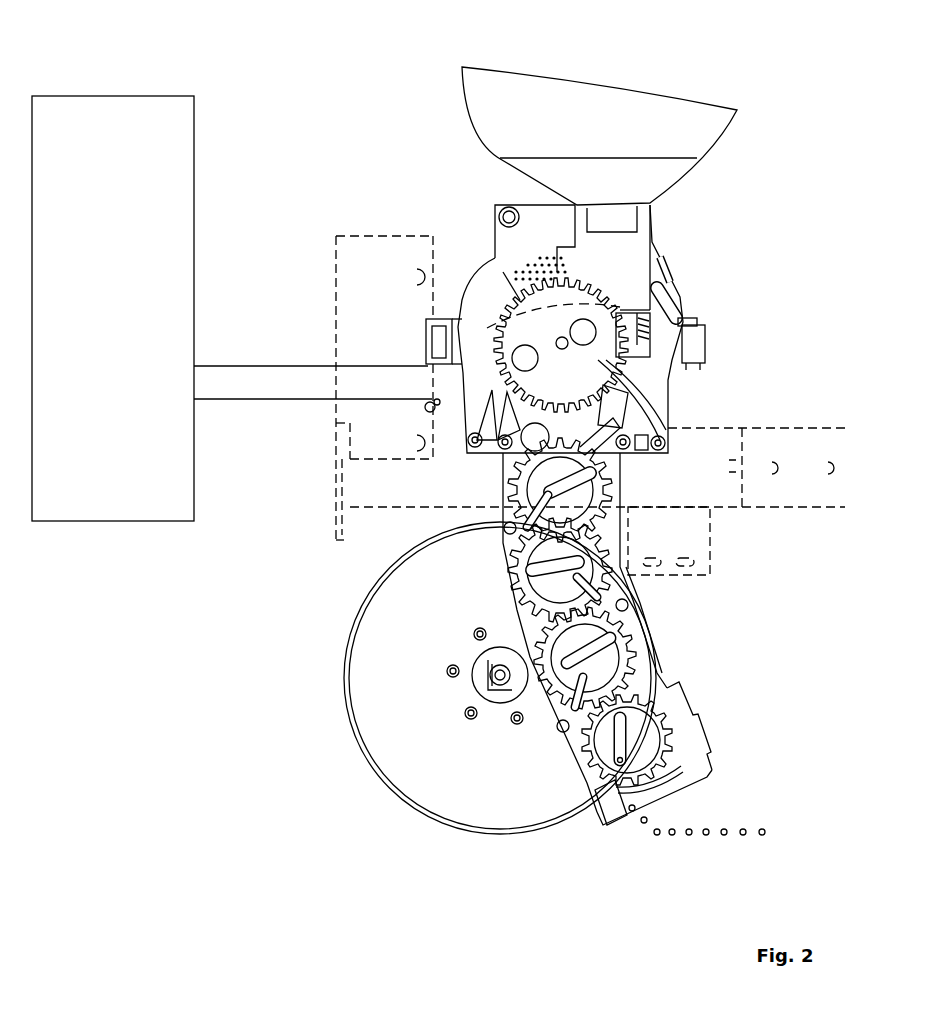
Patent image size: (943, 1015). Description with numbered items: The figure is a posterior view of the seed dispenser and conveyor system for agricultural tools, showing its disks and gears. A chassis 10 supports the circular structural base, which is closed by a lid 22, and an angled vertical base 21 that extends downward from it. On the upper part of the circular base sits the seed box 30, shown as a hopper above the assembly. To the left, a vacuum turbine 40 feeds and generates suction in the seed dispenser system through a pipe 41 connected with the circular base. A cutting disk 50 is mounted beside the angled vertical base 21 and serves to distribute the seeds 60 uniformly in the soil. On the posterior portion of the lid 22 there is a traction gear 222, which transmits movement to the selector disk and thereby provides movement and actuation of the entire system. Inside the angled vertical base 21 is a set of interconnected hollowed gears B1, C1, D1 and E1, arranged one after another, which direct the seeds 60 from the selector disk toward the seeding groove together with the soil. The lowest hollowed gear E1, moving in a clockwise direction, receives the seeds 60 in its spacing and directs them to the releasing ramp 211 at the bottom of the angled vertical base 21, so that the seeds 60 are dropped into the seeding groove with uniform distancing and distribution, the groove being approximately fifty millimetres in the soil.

The chassis 10 is at (349, 236).
The angled vertical base 21 is at (637, 617).
The releasing ramp 211 is at (603, 803).
The lid 22 is at (668, 298).
The traction gear 222 is at (598, 373).
The seed box 30 is at (600, 95).
The vacuum turbine 40 is at (113, 96).
The pipe 41 is at (252, 386).
The cutting disk 50 is at (405, 763).
The seeds 60 is at (687, 835).
The hollowed gear B1 is at (607, 502).
The hollowed gear C1 is at (517, 592).
The hollowed gear D1 is at (637, 656).
The hollowed gear E1 is at (670, 740).